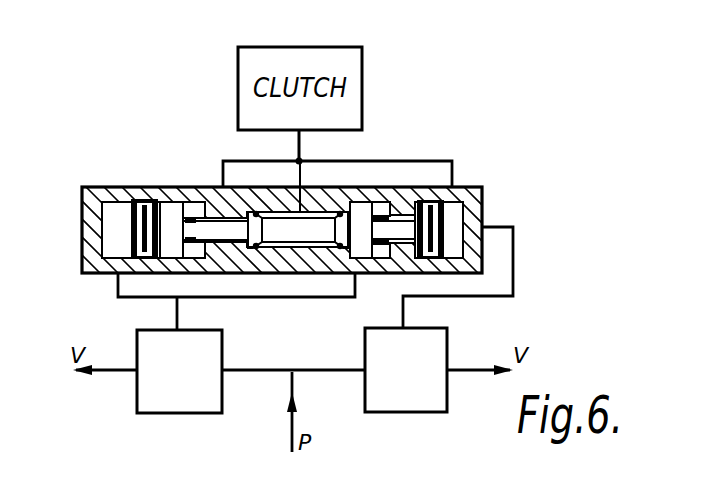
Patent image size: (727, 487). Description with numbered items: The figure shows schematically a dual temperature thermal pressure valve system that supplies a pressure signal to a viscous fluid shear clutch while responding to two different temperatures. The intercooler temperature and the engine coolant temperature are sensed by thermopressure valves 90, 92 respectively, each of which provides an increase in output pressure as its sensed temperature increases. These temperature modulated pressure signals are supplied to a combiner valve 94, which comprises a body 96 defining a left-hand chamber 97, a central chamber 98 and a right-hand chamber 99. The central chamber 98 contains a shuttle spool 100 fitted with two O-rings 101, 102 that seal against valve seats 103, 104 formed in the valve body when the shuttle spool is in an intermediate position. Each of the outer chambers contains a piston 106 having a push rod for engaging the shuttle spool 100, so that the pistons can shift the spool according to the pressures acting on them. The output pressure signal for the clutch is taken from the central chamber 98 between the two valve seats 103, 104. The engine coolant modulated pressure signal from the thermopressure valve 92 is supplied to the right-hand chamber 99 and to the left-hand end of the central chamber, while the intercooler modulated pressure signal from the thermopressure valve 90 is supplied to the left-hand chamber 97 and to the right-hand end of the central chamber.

The thermopressure valve 90 is at (145, 394).
The thermopressure valve 92 is at (433, 398).
The combiner valve 94 is at (68, 266).
The body 96 is at (133, 186).
The left-hand chamber 97 is at (107, 232).
The central chamber 98 is at (211, 207).
The right-hand chamber 99 is at (457, 211).
The shuttle spool 100 is at (290, 231).
The O-ring 101 is at (256, 250).
The O-ring 102 is at (339, 250).
The valve seat 103 is at (250, 205).
The valve seat 104 is at (340, 205).
The piston 106 is at (107, 230).